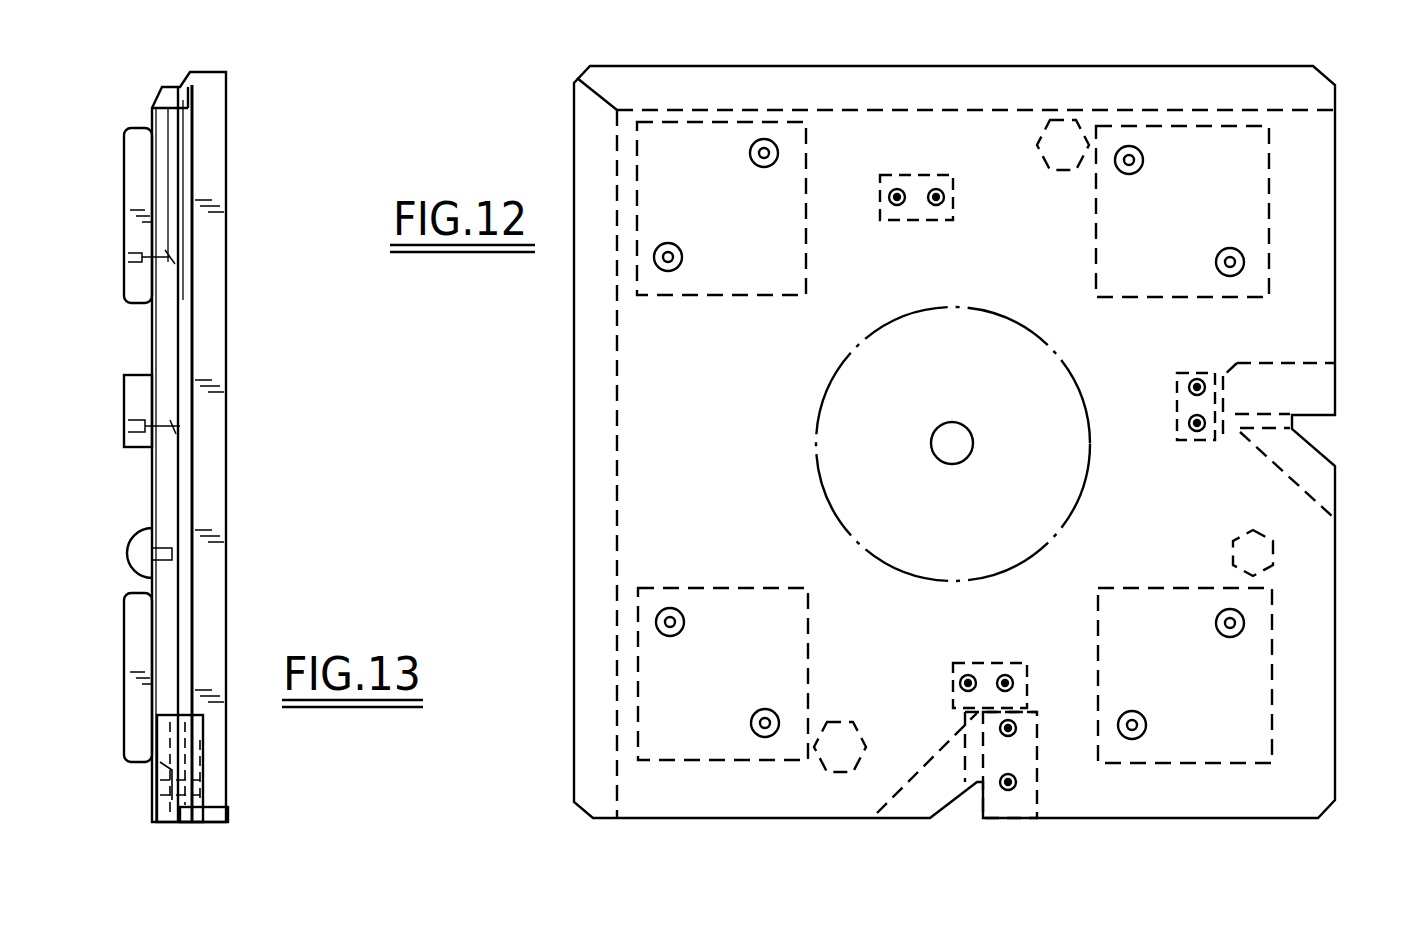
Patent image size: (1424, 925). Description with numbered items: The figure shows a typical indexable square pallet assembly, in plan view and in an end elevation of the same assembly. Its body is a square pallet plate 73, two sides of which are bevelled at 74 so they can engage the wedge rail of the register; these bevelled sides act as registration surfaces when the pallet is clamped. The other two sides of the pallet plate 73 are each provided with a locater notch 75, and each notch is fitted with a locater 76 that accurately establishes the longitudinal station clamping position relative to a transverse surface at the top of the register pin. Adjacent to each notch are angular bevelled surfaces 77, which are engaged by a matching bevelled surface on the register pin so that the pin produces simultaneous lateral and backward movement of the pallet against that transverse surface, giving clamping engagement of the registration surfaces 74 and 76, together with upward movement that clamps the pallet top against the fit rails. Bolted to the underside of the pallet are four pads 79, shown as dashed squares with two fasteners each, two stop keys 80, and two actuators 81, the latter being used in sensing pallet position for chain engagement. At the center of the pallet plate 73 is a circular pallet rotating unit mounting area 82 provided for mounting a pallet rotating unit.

In FIG. 12, the pallet plate 73 is at (745, 424).
In FIG. 12, the bevelled sides 74 is at (754, 96).
In FIG. 13, the bevelled sides 74 is at (150, 322).
In FIG. 12, the locater notch 75 is at (1340, 442).
In FIG. 12, the locater 76 is at (1330, 418).
In FIG. 13, the locater 76 is at (192, 768).
In FIG. 12, the angular bevelled surface 77 is at (884, 830).
In FIG. 13, the angular bevelled surface 77 is at (156, 772).
In FIG. 12, the pad 79 is at (806, 258).
In FIG. 13, the pad 79 is at (121, 237).
In FIG. 12, the stop key 80 is at (1175, 384).
In FIG. 13, the stop key 80 is at (124, 395).
In FIG. 12, the actuator 81 is at (1068, 118).
In FIG. 13, the actuator 81 is at (126, 553).
In FIG. 12, the pallet rotating unit mounting area 82 is at (820, 412).